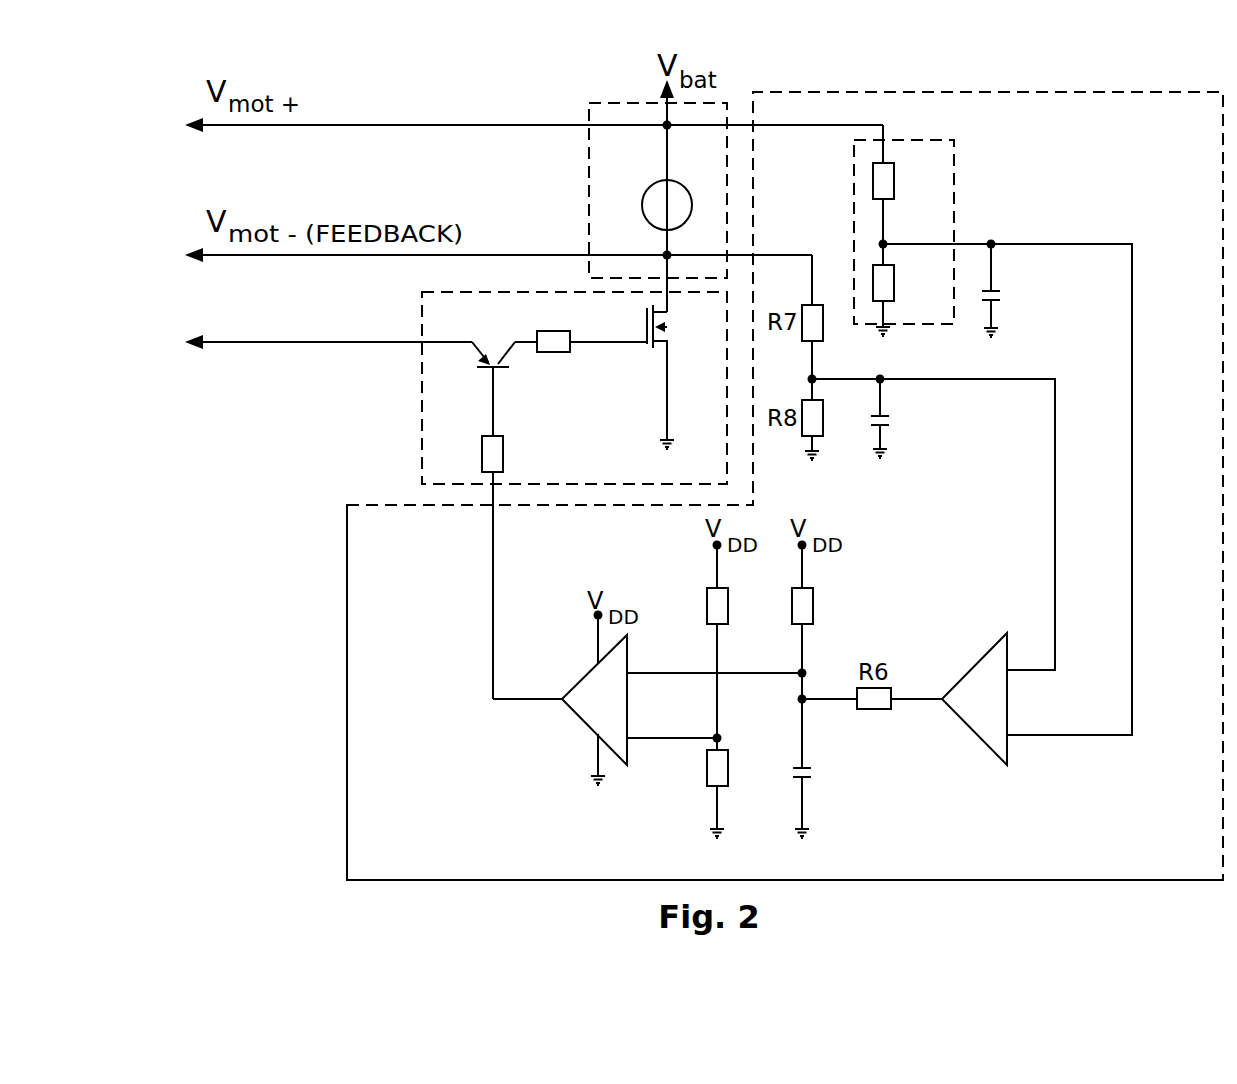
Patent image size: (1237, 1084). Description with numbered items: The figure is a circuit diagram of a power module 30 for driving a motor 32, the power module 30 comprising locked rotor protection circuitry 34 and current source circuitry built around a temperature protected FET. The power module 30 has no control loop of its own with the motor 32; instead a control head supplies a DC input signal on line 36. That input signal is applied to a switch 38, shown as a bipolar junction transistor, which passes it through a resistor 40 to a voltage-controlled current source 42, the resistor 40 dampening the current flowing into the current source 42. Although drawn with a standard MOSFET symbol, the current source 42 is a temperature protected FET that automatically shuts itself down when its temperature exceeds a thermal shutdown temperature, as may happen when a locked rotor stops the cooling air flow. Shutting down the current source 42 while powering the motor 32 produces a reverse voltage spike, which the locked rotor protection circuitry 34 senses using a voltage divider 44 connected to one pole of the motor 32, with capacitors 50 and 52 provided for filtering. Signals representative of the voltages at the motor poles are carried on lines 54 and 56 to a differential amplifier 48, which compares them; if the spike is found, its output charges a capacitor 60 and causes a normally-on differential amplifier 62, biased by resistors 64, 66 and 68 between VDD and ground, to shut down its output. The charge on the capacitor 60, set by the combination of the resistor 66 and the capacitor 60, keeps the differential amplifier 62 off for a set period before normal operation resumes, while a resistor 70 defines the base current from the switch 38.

The power module 30 is at (300, 452).
The motor 32 is at (588, 190).
The locked rotor protection circuitry 34 is at (346, 696).
The line 36 is at (243, 344).
The switch 38 is at (506, 368).
The resistor 40 is at (567, 352).
The voltage-controlled current source 42 is at (661, 330).
The voltage divider 44 is at (955, 186).
The differential amplifier 48 is at (968, 732).
The capacitor 50 is at (1006, 310).
The capacitor 52 is at (895, 427).
The line 54 is at (1131, 526).
The line 56 is at (1054, 528).
The capacitor 60 is at (811, 780).
The differential amplifier 62 is at (565, 706).
The resistor 64 is at (707, 620).
The resistor 66 is at (792, 620).
The resistor 68 is at (707, 787).
The resistor 70 is at (482, 455).